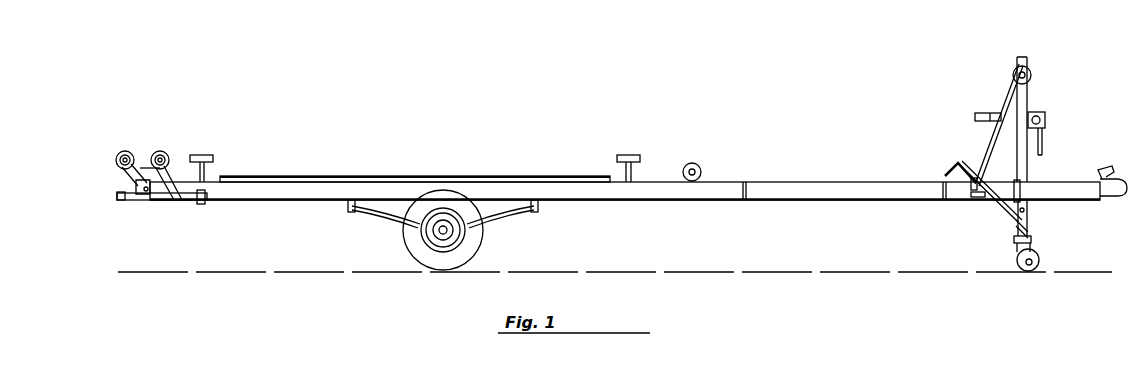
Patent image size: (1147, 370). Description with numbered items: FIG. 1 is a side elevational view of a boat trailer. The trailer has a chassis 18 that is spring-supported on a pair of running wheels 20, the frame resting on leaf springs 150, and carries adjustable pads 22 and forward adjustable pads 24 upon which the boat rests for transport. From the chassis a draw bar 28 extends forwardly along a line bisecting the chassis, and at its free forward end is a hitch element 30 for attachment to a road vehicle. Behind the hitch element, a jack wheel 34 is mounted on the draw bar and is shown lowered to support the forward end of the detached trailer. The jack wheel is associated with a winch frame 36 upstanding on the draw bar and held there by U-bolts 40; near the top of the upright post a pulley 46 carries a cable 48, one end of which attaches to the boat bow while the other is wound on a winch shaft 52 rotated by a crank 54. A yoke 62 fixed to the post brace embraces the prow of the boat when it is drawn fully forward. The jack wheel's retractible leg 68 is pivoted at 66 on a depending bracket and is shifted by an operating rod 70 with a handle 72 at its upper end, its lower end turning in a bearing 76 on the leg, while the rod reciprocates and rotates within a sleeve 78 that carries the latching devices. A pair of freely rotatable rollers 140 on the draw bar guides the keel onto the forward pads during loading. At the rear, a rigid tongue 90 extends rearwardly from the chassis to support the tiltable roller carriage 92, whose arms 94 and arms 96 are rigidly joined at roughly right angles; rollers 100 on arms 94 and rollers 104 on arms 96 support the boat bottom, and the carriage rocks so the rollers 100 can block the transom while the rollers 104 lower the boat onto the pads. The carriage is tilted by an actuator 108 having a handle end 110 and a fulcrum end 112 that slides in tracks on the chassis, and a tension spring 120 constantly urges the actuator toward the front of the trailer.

The chassis 18 is at (687, 200).
The running wheels 20 is at (432, 260).
The adjustable pads 22 is at (207, 156).
The adjustable pads 24 is at (630, 160).
The draw bar 28 is at (858, 200).
The hitch element 30 is at (1116, 196).
The jack wheel 34 is at (1040, 258).
The winch frame 36 is at (1027, 172).
The U-bolts 40 is at (1030, 190).
The pulley 46 is at (1012, 75).
The cable 48 is at (1030, 100).
The winch shaft 52 is at (1046, 119).
The crank 54 is at (1045, 140).
The yoke 62 is at (975, 117).
The pivot 66 is at (1030, 212).
The retractible leg 68 is at (1032, 240).
The operating rod 70 is at (1003, 206).
The handle 72 is at (950, 170).
The bearing 76 is at (1016, 230).
The sleeve 78 is at (980, 184).
The tongue 90 is at (152, 200).
The roller carriage 92 is at (128, 177).
The arms 94 is at (136, 186).
The arms 96 is at (148, 170).
The rollers 100 is at (116, 157).
The rollers 104 is at (165, 152).
The actuator 108 is at (167, 200).
The handle end 110 is at (120, 199).
The fulcrum end 112 is at (199, 196).
The tension spring 120 is at (281, 200).
The rollers 140 is at (701, 167).
The leaf springs 150 is at (497, 221).